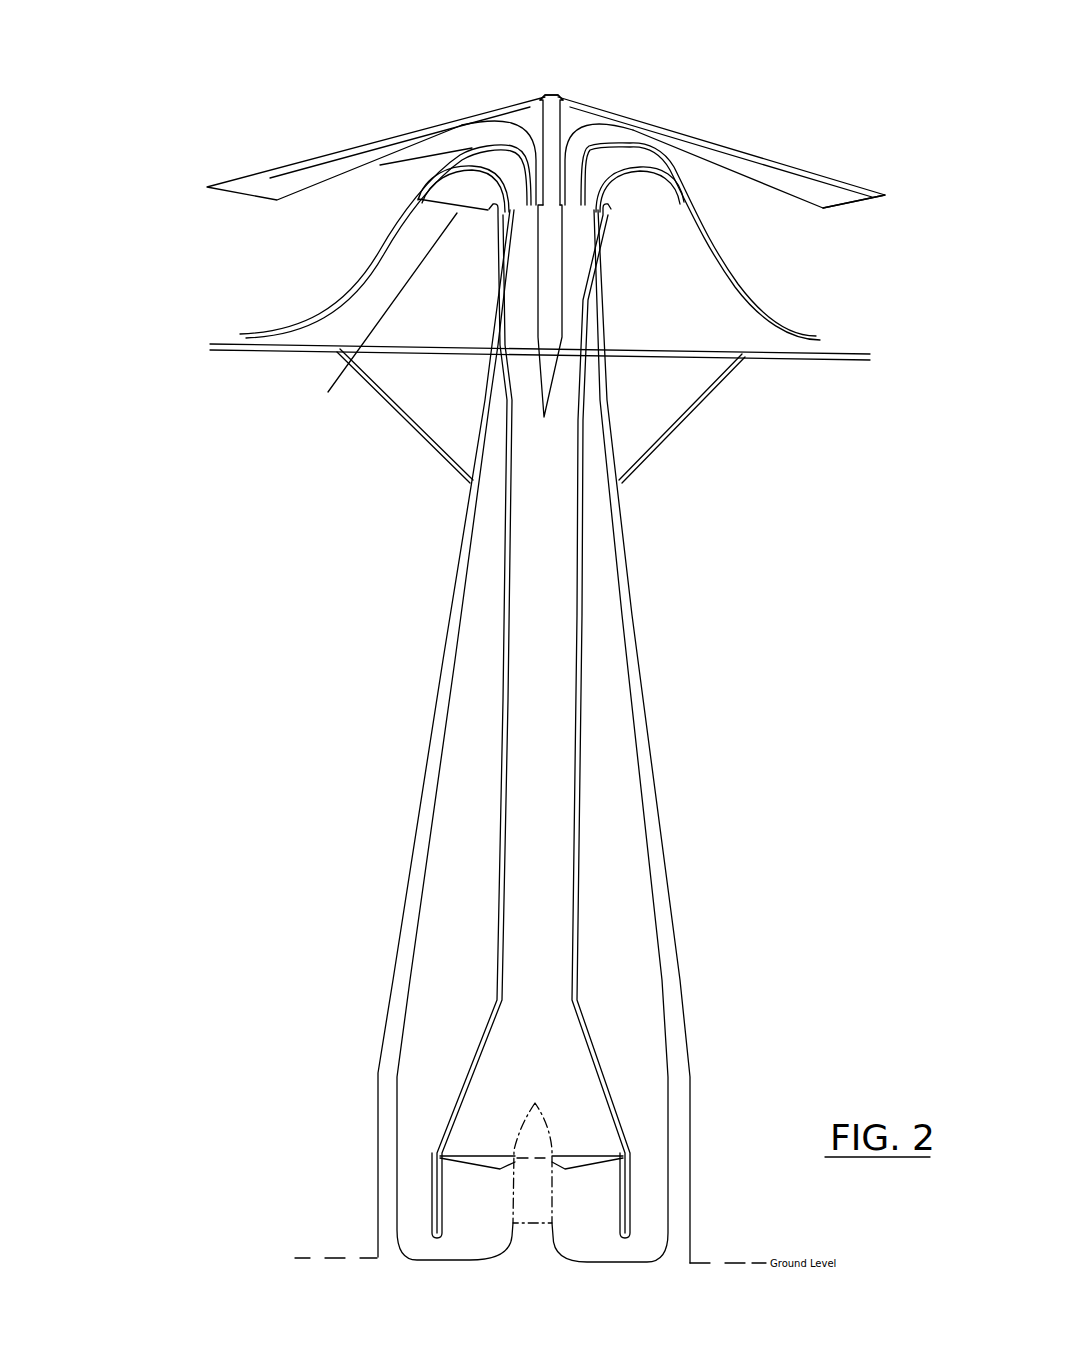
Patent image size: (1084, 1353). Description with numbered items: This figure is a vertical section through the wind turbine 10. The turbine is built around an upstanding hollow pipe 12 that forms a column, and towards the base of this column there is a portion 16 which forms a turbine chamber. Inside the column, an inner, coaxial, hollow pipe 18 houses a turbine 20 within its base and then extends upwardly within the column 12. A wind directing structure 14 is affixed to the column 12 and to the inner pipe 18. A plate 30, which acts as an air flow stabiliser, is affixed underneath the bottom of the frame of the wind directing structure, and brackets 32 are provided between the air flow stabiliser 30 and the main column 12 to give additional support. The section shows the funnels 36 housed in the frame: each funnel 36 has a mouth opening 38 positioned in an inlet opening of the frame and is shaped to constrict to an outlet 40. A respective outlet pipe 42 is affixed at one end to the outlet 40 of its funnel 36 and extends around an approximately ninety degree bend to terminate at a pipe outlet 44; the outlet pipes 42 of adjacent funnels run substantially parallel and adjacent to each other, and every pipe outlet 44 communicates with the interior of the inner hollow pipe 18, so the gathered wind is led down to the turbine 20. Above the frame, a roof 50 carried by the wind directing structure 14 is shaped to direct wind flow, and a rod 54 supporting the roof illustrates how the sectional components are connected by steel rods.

The wind turbine 10 is at (902, 608).
The hollow pipe 12 is at (648, 750).
The wind directing structure 14 is at (195, 262).
The portion forming a turbine chamber 16 is at (377, 1180).
The inner hollow pipe 18 is at (578, 812).
The turbine 20 is at (553, 1132).
The plate (air flow stabiliser) 30 is at (423, 350).
The brackets 32 is at (660, 452).
The funnels 36 is at (355, 170).
The mouth opening 38 is at (808, 215).
The outlet 40 is at (466, 136).
The outlet pipe 42 is at (622, 124).
The pipe outlet 44 is at (568, 336).
The roof 50 is at (712, 138).
The rod 54 is at (552, 128).